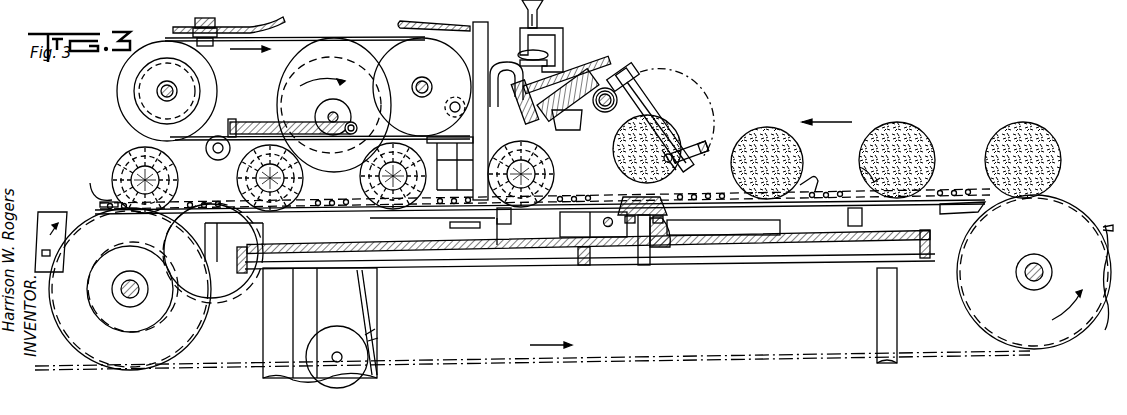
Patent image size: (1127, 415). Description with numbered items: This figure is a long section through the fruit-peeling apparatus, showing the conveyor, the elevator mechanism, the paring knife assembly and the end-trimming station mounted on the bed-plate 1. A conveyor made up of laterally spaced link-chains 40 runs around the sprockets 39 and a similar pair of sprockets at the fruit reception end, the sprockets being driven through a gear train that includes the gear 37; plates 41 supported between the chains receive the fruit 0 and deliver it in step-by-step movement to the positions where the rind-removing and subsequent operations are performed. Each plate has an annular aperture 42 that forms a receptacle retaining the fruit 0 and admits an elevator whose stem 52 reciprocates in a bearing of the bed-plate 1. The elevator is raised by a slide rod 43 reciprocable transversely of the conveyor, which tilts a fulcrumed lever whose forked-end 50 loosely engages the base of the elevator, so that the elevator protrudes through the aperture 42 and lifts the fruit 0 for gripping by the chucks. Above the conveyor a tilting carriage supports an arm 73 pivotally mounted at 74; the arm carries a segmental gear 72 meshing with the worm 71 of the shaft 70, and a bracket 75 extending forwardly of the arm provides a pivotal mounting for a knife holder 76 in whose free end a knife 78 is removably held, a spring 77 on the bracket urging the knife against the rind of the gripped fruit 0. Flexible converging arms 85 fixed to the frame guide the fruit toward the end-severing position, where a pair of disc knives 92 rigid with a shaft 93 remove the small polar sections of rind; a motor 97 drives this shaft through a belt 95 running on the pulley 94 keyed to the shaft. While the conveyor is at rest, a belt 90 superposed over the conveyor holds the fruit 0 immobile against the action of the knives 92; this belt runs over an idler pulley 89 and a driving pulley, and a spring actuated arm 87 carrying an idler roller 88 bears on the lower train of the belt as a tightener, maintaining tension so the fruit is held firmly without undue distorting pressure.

The bed-plate 1 is at (742, 255).
The gear 37 is at (163, 239).
The sprockets 39 is at (180, 356).
The link-chains 40 is at (711, 190).
The plates 41 is at (100, 207).
The annular aperture 42 is at (866, 172).
The rod 43 is at (603, 222).
The forked-end 50 is at (625, 246).
The stem 52 is at (641, 254).
The shaft 70 is at (608, 87).
The worm 71 is at (603, 113).
The segmental gear 72 is at (577, 118).
The arm 73 is at (588, 72).
The pivot 74 is at (568, 63).
The bracket 75 is at (624, 73).
The knife holder 76 is at (645, 98).
The spring 77 is at (661, 115).
The knife 78 is at (682, 151).
The converging arms 85 is at (468, 178).
The spring actuated arm 87 is at (268, 142).
The idler roller 88 is at (357, 129).
The idler pulley 89 is at (425, 50).
The belt 90 is at (373, 37).
The disc knives 92 is at (265, 80).
The shaft 93 is at (328, 115).
The pulley 94 is at (333, 60).
The belt 95 is at (372, 303).
The motor 97 is at (392, 346).
The fruit 0 is at (128, 165).